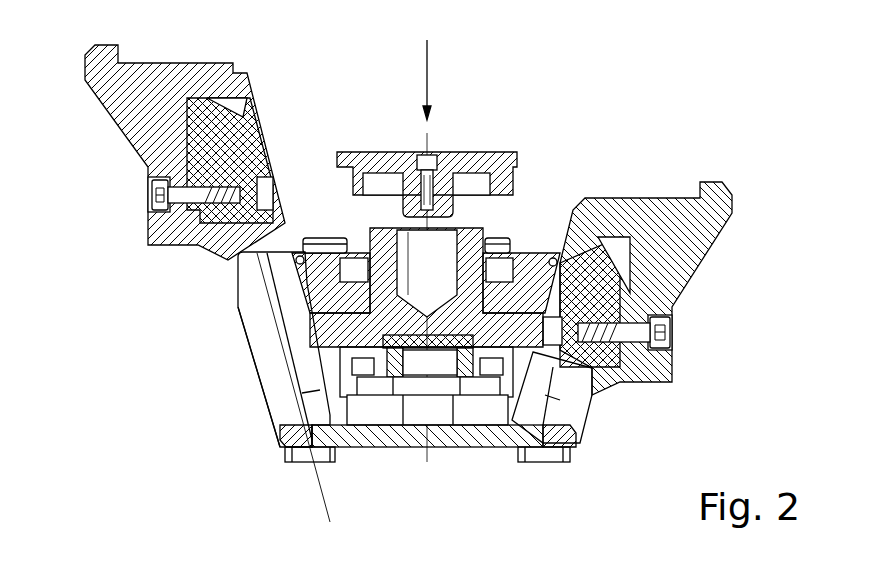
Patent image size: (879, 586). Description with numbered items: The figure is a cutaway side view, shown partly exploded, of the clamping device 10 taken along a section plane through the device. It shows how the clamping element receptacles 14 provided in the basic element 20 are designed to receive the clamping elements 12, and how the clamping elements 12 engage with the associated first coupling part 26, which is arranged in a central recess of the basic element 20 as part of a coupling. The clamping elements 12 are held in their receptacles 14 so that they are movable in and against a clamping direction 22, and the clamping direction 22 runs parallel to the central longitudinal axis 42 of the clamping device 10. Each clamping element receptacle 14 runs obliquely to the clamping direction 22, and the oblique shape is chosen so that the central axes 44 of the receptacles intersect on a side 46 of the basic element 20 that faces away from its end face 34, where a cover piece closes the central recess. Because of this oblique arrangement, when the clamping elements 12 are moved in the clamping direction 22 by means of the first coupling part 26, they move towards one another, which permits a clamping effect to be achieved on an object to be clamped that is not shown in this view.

The clamping device 10 is at (549, 92).
The clamping element 12 is at (106, 152).
The clamping element receptacle 14 is at (250, 393).
The basic element 20 is at (247, 348).
The clamping direction 22 is at (428, 62).
The first coupling part 26 is at (473, 237).
The end face 34 is at (546, 234).
The central longitudinal axis 42 is at (427, 455).
The central axis of clamping element receptacle 44 is at (322, 500).
The side facing away from the end face 46 is at (379, 448).